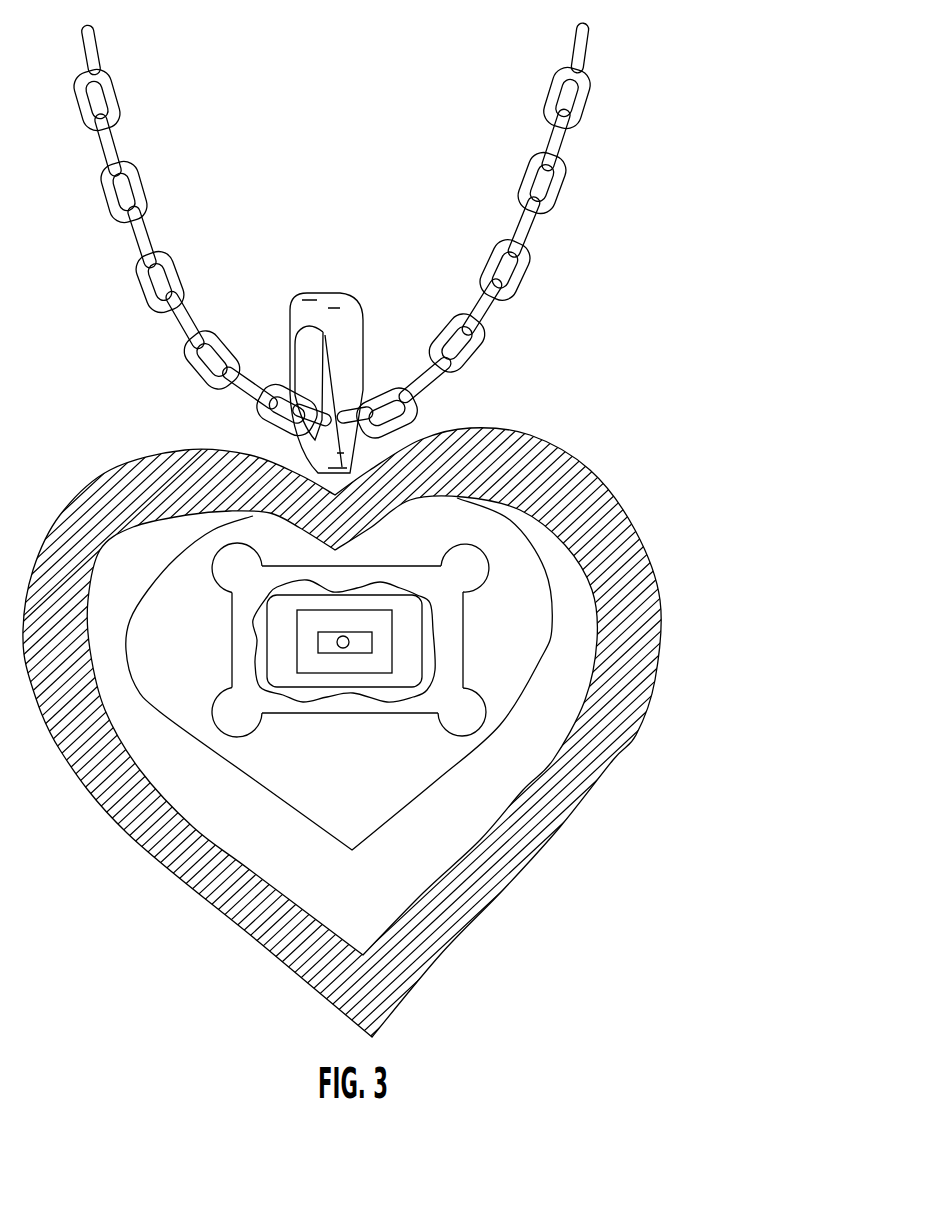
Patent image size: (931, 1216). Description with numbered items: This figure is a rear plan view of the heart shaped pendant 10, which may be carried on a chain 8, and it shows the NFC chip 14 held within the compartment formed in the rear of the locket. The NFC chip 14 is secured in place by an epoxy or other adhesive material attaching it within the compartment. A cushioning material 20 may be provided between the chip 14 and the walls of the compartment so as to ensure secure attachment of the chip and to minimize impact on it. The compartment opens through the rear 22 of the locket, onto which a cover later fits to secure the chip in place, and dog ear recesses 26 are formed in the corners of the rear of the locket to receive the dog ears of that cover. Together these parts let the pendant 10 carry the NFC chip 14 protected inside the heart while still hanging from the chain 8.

The chain 8 is at (107, 150).
The heart shaped pendant 10 is at (497, 426).
The NFC chip 14 is at (462, 603).
The cushioning material 20 is at (297, 693).
The rear of the locket 22 is at (197, 572).
The dog ear recesses 26 is at (237, 565).